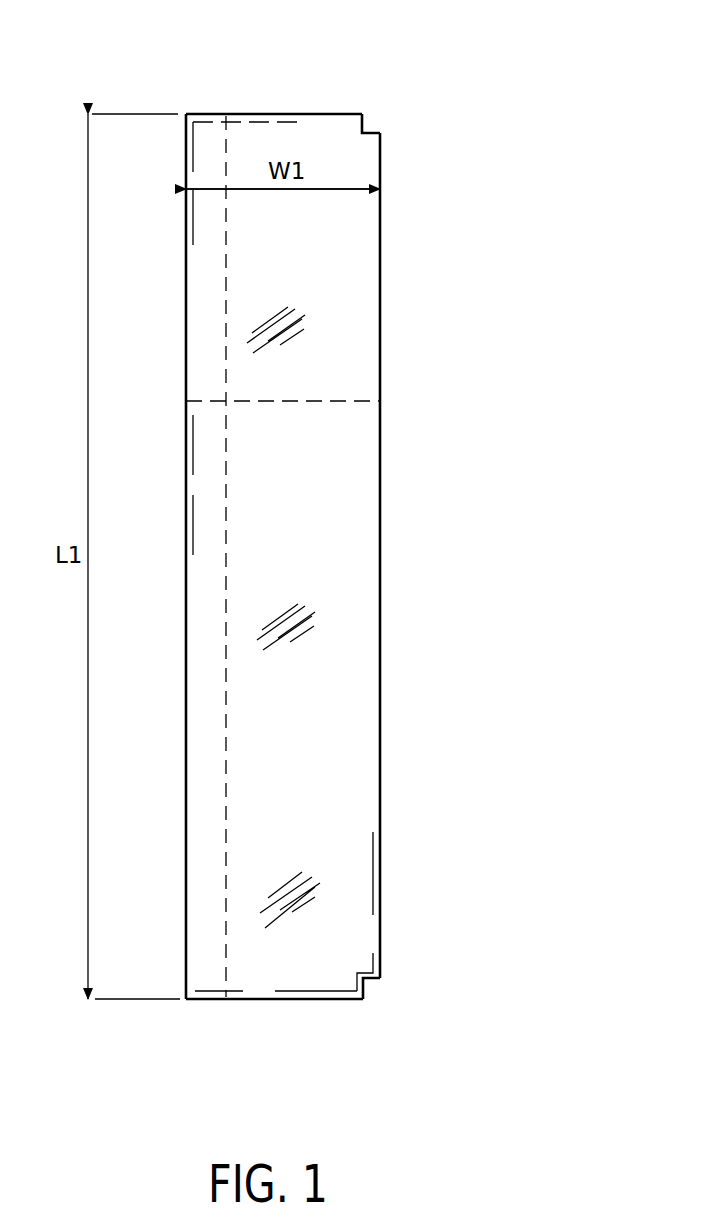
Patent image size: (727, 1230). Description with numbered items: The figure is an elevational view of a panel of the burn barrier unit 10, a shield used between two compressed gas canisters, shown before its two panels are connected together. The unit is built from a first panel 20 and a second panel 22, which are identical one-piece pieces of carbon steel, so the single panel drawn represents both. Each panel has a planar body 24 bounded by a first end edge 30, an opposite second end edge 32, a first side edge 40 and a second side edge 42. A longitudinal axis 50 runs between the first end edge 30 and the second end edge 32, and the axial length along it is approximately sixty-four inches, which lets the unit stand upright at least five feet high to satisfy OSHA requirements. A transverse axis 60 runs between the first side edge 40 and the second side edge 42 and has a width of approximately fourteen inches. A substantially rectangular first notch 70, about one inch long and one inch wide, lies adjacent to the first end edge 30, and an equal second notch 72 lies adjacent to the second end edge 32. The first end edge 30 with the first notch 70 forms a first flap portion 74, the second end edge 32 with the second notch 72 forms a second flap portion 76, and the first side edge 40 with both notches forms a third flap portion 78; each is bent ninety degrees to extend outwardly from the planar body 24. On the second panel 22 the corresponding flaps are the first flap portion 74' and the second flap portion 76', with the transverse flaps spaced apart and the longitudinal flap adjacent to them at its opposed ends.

The burn barrier unit 10 is at (438, 263).
The first panel 20 is at (423, 453).
The second panel 22 is at (327, 540).
The planar body 24 is at (309, 494).
The first end edge 30 is at (303, 113).
The second end edge 32 is at (281, 1001).
The first side edge 40 is at (380, 197).
The second side edge 42 is at (187, 620).
The longitudinal axis 50 is at (229, 237).
The transverse axis 60 is at (327, 401).
The first notch 70 is at (368, 123).
The second notch 72 is at (373, 986).
The first flap portion 74 is at (245, 284).
The first flap portion 74' is at (245, 338).
The second flap portion 76 is at (227, 1010).
The second flap portion 76' is at (284, 972).
The third flap portion 78 is at (472, 758).